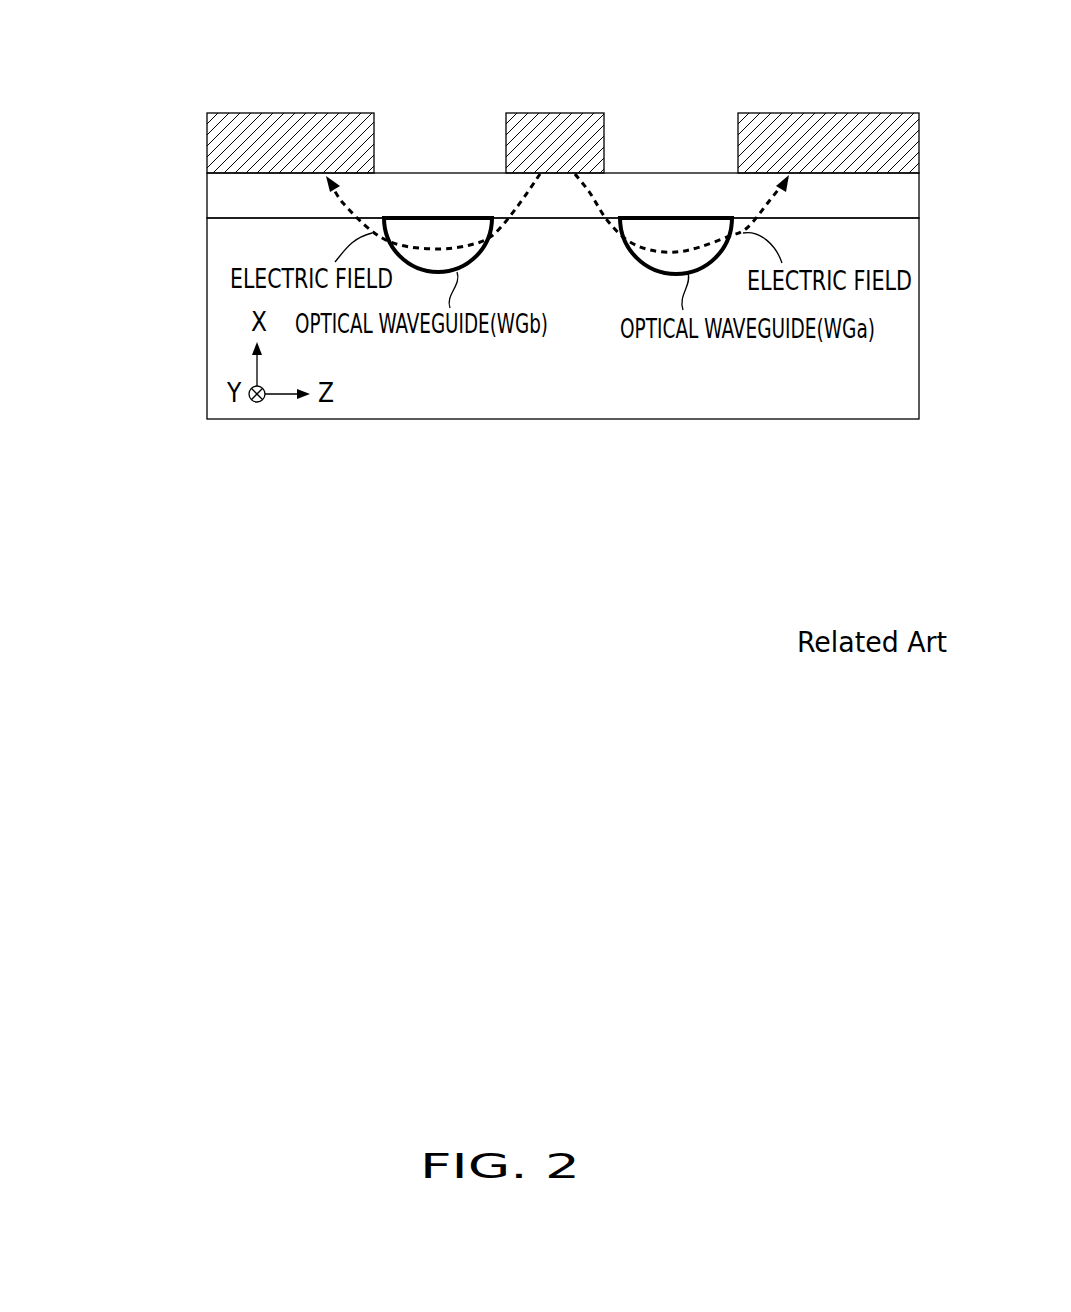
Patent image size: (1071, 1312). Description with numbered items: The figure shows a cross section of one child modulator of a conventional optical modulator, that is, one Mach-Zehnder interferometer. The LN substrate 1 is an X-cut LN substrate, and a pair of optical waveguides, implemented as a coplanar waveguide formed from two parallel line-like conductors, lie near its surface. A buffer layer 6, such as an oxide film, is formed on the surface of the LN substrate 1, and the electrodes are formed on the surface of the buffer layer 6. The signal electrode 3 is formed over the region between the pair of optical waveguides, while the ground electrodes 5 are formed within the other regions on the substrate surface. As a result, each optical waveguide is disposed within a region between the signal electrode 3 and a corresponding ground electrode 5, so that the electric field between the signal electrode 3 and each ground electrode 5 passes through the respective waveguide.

The LN substrate 1 is at (208, 275).
The signal electrode 3 is at (548, 112).
The ground electrode 5 is at (290, 113).
The buffer layer 6 is at (218, 200).